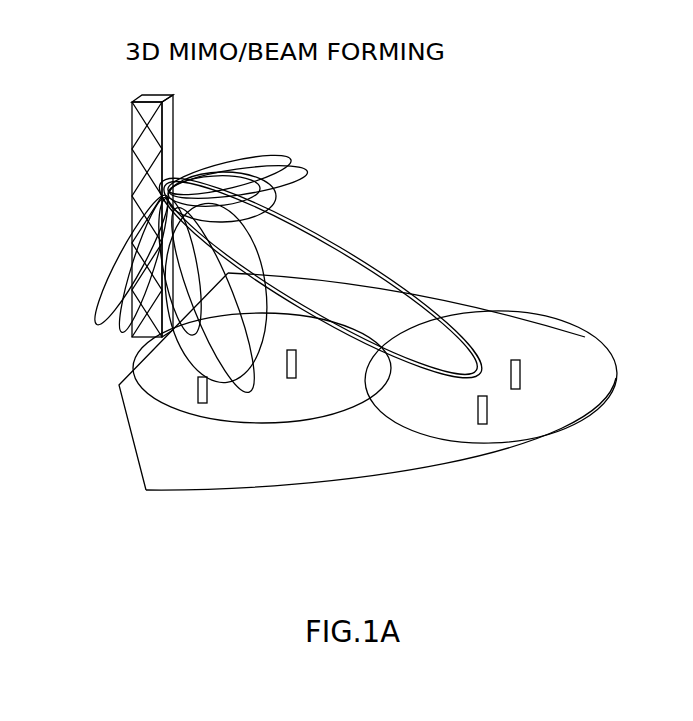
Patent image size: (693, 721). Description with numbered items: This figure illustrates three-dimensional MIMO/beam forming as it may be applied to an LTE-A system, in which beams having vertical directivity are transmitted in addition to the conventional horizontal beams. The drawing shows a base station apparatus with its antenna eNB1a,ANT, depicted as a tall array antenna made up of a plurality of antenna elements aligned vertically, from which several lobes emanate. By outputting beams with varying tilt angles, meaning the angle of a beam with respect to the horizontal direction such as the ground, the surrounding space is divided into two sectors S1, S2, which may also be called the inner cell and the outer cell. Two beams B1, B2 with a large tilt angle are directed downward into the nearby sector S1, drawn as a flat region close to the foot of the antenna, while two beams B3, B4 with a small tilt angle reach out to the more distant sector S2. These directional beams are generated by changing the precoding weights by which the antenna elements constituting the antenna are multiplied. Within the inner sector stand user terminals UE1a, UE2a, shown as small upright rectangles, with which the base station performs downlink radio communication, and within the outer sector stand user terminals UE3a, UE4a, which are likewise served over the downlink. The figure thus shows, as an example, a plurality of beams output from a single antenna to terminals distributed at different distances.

The base station apparatus and antenna eNB1a,ANT is at (183, 150).
The beam B1 is at (230, 386).
The beam B2 is at (250, 380).
The beam B3 is at (478, 362).
The beam B4 is at (460, 375).
The sector S1 is at (157, 399).
The sector S2 is at (567, 332).
The user terminal UE1a is at (202, 403).
The user terminal UE2a is at (291, 378).
The user terminal UE3a is at (482, 424).
The user terminal UE4a is at (515, 389).